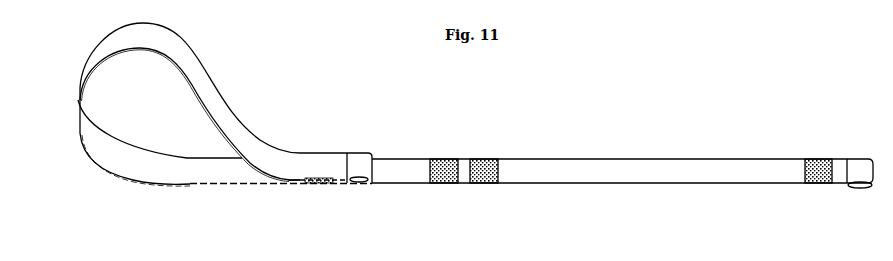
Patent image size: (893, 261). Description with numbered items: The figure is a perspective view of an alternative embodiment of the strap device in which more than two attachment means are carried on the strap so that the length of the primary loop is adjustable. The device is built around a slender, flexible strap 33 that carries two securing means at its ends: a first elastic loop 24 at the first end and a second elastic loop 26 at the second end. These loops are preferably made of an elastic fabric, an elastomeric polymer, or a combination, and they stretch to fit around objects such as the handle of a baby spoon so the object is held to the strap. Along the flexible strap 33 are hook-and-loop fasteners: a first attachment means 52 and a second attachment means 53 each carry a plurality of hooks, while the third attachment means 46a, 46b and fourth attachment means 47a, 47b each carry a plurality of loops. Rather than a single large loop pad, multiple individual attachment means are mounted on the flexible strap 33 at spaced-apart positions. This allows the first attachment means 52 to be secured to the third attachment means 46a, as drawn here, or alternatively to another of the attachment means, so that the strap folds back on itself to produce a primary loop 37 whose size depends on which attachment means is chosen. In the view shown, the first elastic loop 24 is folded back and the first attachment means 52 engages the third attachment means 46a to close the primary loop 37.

The primary loop 37 is at (83, 78).
The first elastic loop 24 is at (358, 153).
The first attachment means 52 is at (323, 178).
The third attachment means 46a is at (324, 183).
The third attachment means 46b is at (360, 184).
The fourth attachment means 47a is at (443, 184).
The fourth attachment means 47b is at (490, 184).
The flexible strap 33 is at (614, 172).
The second attachment means 53 is at (816, 158).
The second elastic loop 26 is at (860, 188).